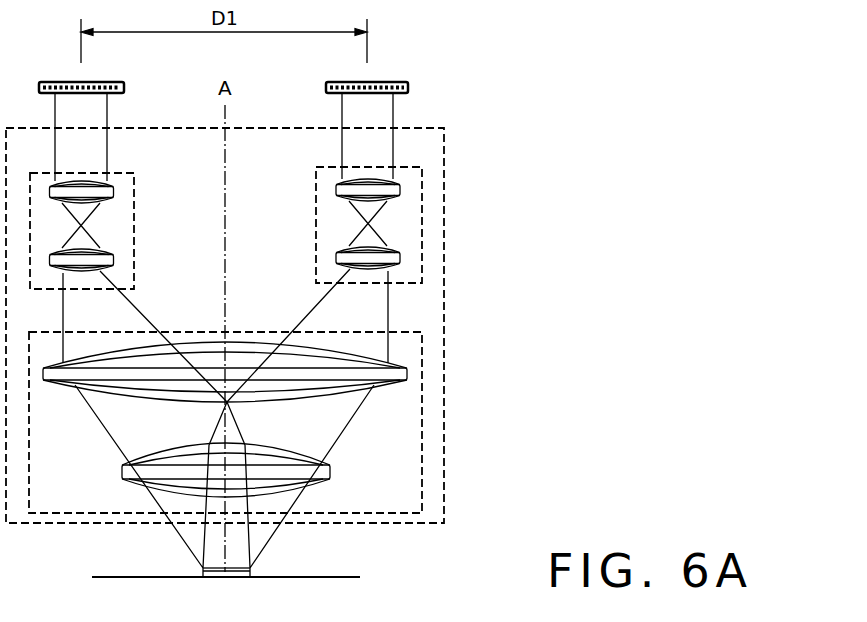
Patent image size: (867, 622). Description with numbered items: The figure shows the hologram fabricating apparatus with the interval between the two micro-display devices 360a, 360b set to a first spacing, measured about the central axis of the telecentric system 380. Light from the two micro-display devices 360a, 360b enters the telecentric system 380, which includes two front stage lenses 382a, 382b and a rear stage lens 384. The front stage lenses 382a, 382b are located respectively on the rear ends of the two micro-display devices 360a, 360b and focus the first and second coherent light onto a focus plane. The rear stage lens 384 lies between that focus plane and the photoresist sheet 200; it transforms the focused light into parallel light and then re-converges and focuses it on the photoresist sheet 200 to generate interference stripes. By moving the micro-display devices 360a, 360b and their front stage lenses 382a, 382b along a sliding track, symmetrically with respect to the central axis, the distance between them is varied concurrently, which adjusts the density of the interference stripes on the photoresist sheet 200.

The micro-display device 360a is at (116, 82).
The micro-display device 360b is at (405, 82).
The telecentric system 380 is at (258, 127).
The front stage lens 382a is at (115, 173).
The front stage lens 382b is at (325, 167).
The rear stage lens 384 is at (257, 332).
The photoresist sheet 200 is at (248, 573).